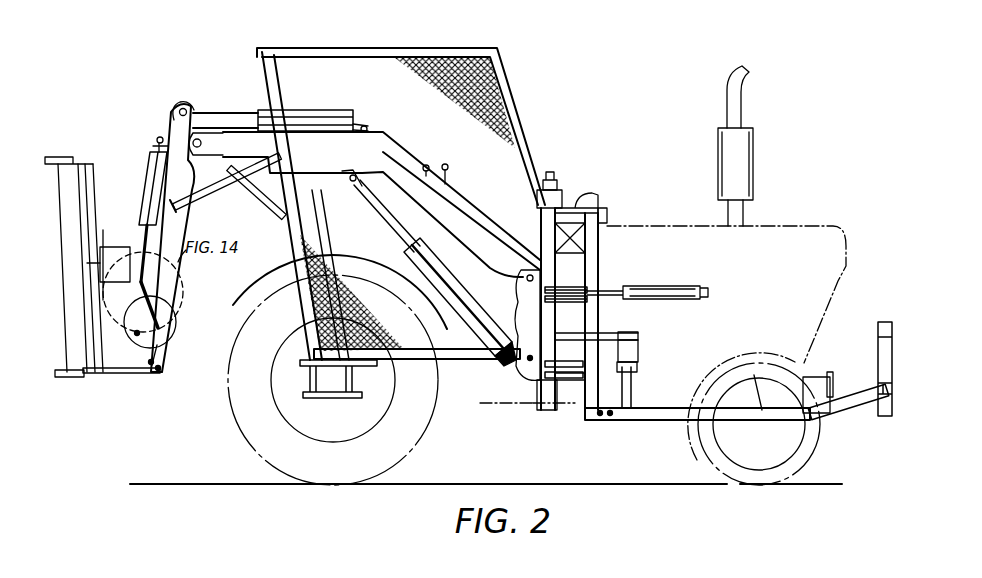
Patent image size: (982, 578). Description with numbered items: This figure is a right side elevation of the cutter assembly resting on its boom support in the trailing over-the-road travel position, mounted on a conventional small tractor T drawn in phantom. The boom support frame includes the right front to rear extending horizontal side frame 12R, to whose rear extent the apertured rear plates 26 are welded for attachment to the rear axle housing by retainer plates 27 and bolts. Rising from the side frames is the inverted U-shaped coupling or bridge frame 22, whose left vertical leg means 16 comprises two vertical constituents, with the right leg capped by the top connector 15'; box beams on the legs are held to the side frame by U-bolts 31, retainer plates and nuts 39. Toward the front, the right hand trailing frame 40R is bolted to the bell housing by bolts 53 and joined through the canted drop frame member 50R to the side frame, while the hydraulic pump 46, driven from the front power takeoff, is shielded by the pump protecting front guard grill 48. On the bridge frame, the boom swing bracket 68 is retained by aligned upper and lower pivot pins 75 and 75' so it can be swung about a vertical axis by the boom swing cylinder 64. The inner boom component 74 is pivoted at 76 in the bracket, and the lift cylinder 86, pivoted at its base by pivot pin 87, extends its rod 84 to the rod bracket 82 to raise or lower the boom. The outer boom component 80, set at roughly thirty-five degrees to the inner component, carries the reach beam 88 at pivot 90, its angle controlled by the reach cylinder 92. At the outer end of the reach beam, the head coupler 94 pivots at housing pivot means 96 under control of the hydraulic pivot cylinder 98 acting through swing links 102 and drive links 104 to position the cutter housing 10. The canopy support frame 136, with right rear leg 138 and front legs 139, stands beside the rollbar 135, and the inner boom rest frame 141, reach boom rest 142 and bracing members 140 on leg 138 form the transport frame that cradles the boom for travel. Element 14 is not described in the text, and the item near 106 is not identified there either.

The cutter housing 10 is at (73, 150).
The right horizontal side frame 12R is at (433, 366).
The rear column 14 is at (599, 268).
The top connector 15' is at (591, 185).
The left vertical leg means 16 is at (540, 233).
The coupling or bridge frame 22 is at (560, 161).
The rear plates 26 is at (283, 388).
The retainer plates 27 is at (325, 398).
The U-bolts 31 is at (482, 366).
The nuts 39 is at (517, 372).
The right hand trailing frame 40R is at (748, 380).
The hydraulic pump 46 is at (828, 375).
The pump protecting front guard grill 48 is at (835, 420).
The canted drop frame member 50R is at (630, 390).
The bolts 53 is at (610, 416).
The boom swing cylinder 64 is at (666, 287).
The boom swing bracket 68 is at (530, 286).
The inner boom component 74 is at (460, 222).
The upper pivot pin 75 is at (566, 272).
The lower pivot pin 75' is at (564, 402).
The inner boom pivot 76 is at (525, 274).
The outer boom component 80 is at (310, 150).
The rod bracket 82 is at (362, 162).
The lift cylinder rod 84 is at (400, 222).
The lift cylinder 86 is at (428, 308).
The lift cylinder pivot pin 87 is at (536, 400).
The reach beam 88 is at (174, 262).
The reach beam pivot 90 is at (190, 112).
The reach cylinder 92 is at (325, 112).
The head coupler 94 is at (133, 374).
The housing pivot means 96 is at (160, 372).
The coupler or hydraulic pivot cylinder 98 is at (150, 160).
The swing links 102 is at (166, 318).
The drive links 104 is at (127, 372).
The bracket 106 is at (128, 248).
The rollbar 135 is at (280, 80).
The canopy support frame 136 is at (369, 49).
The right rear leg 138 is at (300, 217).
The front legs 139 is at (540, 115).
The bracing members 140 is at (256, 220).
The inner boom rest frame 141 is at (262, 170).
The reach boom rest 142 is at (205, 209).
The tractor T is at (826, 240).